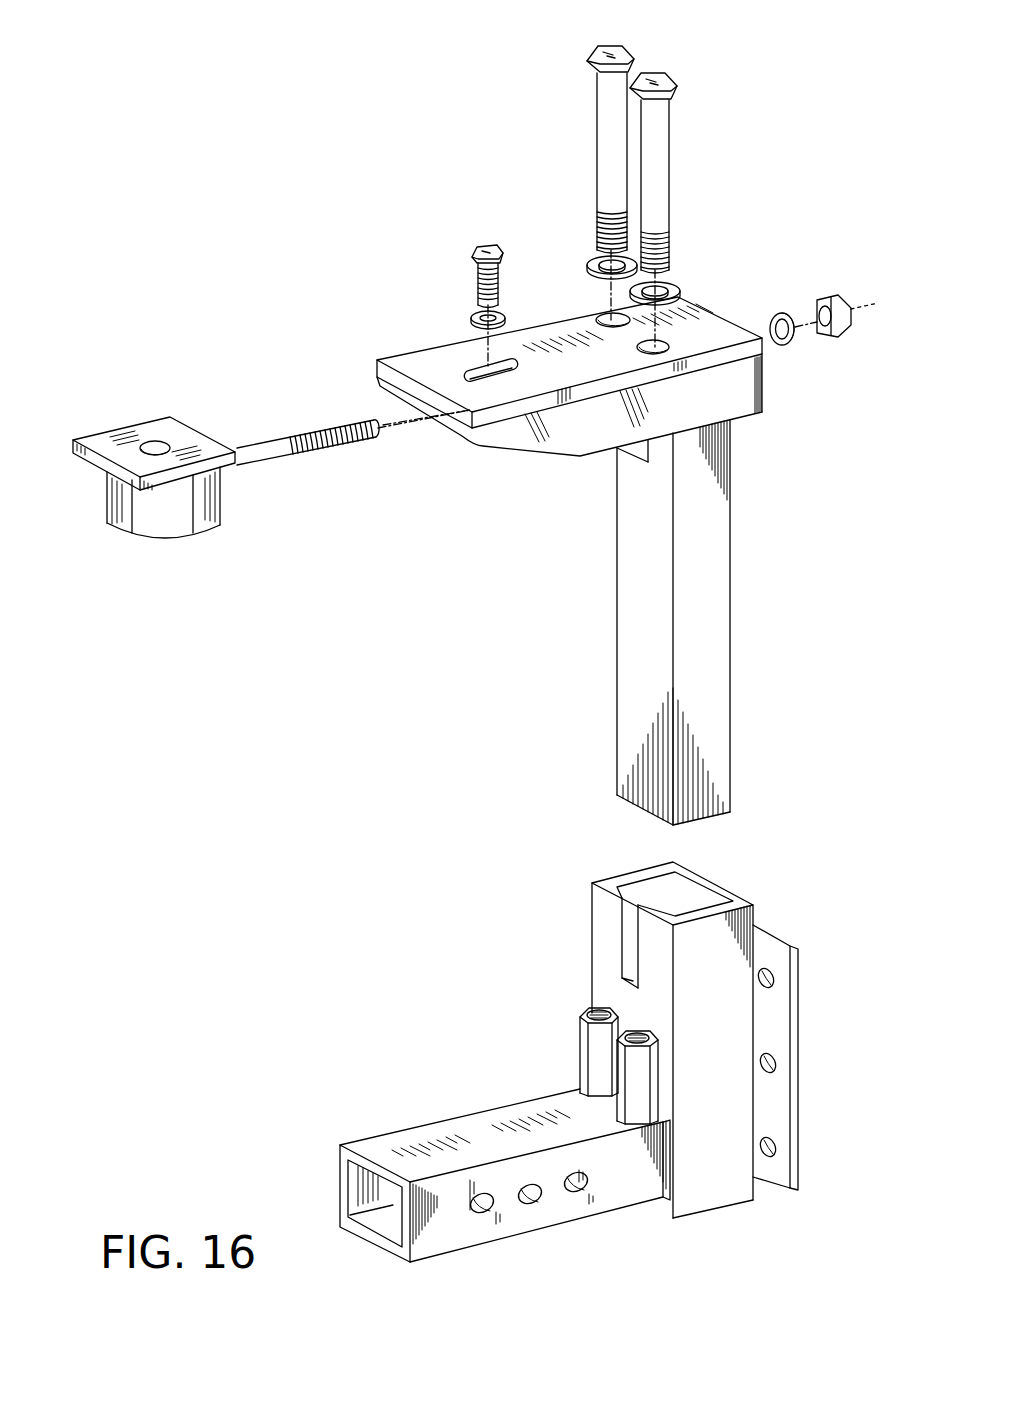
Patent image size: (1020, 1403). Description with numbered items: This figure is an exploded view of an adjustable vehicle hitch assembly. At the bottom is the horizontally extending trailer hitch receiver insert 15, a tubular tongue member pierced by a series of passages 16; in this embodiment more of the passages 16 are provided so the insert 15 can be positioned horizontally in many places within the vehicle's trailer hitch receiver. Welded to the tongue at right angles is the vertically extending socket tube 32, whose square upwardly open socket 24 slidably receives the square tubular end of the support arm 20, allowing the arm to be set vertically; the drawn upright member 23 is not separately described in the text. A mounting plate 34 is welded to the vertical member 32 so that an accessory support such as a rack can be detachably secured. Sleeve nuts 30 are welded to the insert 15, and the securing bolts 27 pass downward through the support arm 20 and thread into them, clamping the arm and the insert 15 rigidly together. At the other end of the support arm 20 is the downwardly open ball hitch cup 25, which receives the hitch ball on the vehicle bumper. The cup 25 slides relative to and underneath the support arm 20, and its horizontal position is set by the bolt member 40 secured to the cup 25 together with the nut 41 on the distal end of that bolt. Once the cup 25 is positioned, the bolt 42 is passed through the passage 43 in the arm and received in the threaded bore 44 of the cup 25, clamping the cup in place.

The bolt 27 is at (592, 52).
The bolt 42 is at (473, 260).
The passage 43 is at (465, 372).
The nut 41 is at (840, 295).
The support arm 20 is at (738, 405).
The threaded bore 44 is at (160, 447).
The bolt member 40 is at (275, 455).
The ball hitch cup 25 is at (150, 542).
The upright post 23 is at (622, 598).
The socket 24 is at (657, 884).
The mounting plate 34 is at (770, 950).
The socket tube 32 is at (598, 966).
The sleeve nut 30 is at (582, 1050).
The trailer hitch receiver insert 15 is at (580, 1205).
The passage 16 is at (493, 1207).